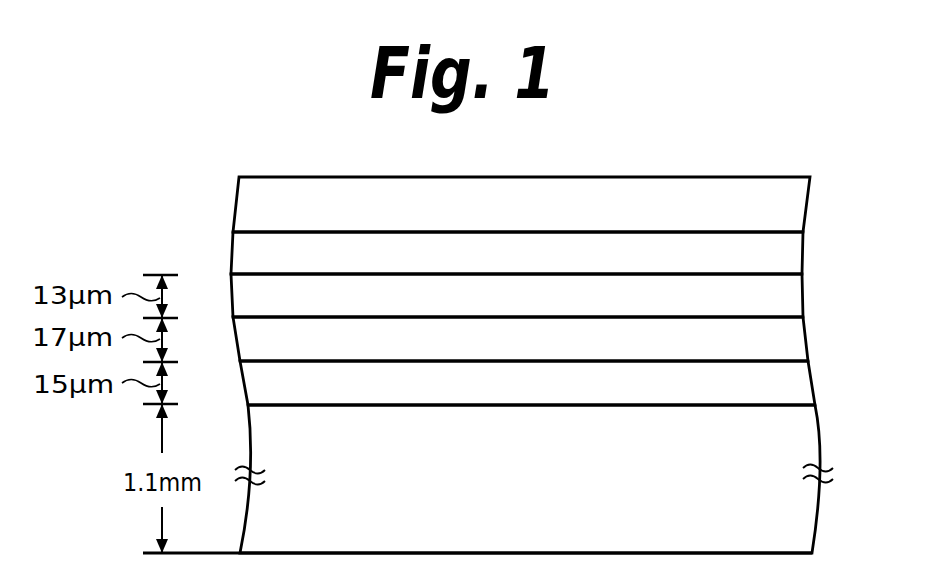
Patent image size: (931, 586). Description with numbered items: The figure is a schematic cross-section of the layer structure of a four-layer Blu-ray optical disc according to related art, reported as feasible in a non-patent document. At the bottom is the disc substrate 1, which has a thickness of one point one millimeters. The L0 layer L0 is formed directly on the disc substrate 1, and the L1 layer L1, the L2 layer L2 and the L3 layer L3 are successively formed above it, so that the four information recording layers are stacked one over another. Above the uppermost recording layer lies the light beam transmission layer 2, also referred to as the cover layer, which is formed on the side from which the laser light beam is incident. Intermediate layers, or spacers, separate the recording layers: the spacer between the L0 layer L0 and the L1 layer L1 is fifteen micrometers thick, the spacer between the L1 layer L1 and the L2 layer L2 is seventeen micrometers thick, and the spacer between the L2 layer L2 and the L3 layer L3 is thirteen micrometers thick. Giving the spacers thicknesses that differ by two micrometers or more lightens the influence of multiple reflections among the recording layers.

The disc substrate 1 is at (800, 511).
The light beam transmission layer 2 is at (787, 204).
The L0 layer L0 is at (788, 402).
The L1 layer L1 is at (773, 358).
The L2 layer L2 is at (773, 314).
The L3 layer L3 is at (773, 271).